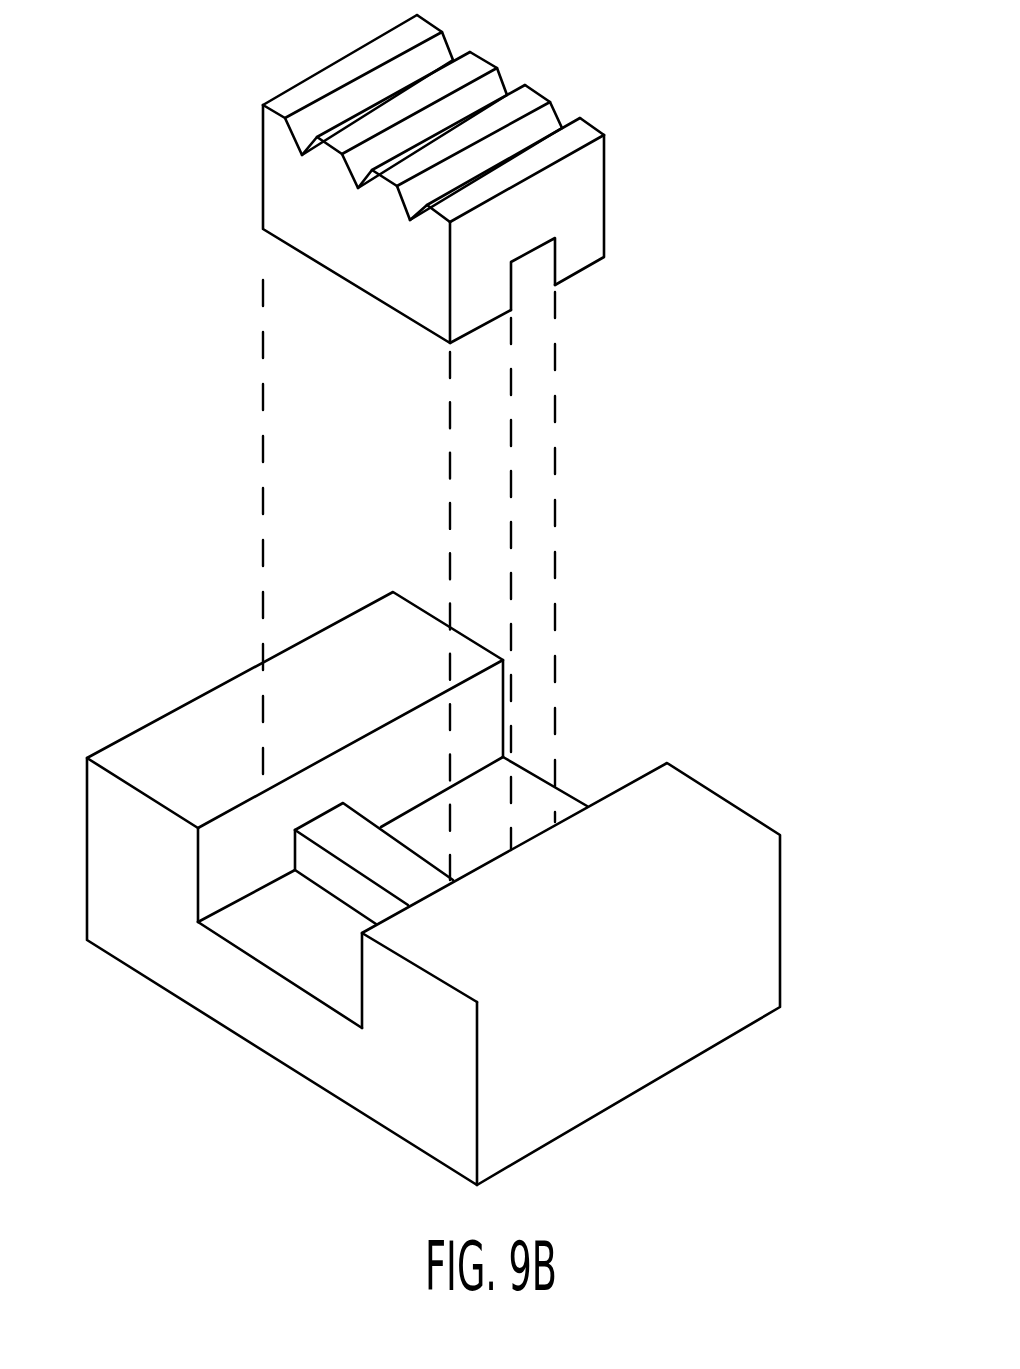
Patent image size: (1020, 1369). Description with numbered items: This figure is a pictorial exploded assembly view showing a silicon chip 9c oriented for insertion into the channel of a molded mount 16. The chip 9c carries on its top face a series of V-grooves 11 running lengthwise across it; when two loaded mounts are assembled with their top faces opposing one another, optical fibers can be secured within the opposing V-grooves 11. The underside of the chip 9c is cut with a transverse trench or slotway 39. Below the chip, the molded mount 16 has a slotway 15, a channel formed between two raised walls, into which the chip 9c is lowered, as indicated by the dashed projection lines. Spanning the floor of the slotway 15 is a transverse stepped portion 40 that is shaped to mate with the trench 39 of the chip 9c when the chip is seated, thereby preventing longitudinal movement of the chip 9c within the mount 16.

The silicon chip 9c is at (424, 292).
The V-groove 11 is at (442, 52).
The transverse trench or slotway 39 is at (542, 267).
The molded mount 16 is at (692, 1004).
The slotway 15 is at (569, 809).
The transverse stepped portion 40 is at (340, 887).